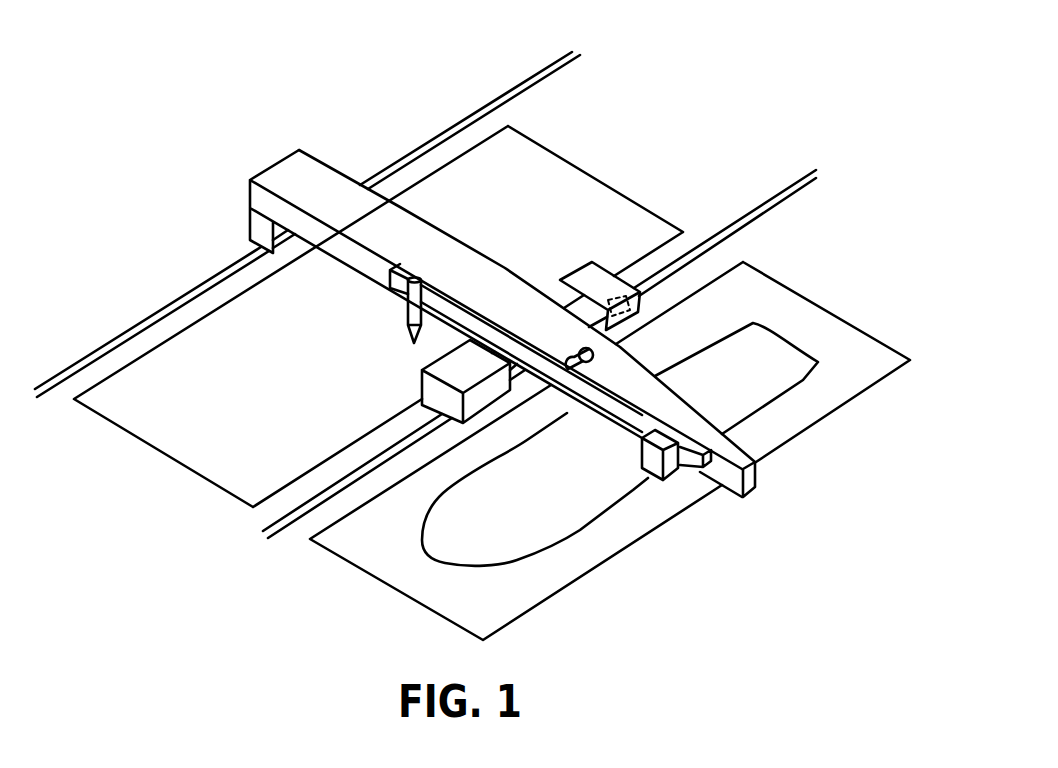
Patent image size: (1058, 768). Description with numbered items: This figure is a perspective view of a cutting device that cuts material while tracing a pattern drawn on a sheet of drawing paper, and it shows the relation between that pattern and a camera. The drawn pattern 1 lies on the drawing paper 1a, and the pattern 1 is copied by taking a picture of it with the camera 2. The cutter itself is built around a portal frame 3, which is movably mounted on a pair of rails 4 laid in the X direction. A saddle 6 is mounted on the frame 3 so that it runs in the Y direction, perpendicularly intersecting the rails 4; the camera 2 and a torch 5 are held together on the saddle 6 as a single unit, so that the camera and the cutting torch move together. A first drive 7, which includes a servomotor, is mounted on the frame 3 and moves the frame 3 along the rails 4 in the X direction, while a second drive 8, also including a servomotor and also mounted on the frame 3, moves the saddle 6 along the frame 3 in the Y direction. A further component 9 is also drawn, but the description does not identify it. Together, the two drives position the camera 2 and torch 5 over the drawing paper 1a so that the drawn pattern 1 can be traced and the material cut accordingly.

The figure 1 is at (520, 563).
The drawing paper 1a is at (627, 549).
The camera 2 is at (647, 460).
The portal frame 3 is at (430, 237).
The rails 4 is at (520, 83).
The torch 5 is at (407, 320).
The saddle 6 is at (468, 302).
The first drive 7 is at (637, 321).
The second drive 8 is at (573, 354).
The rear slider block 9 is at (590, 193).